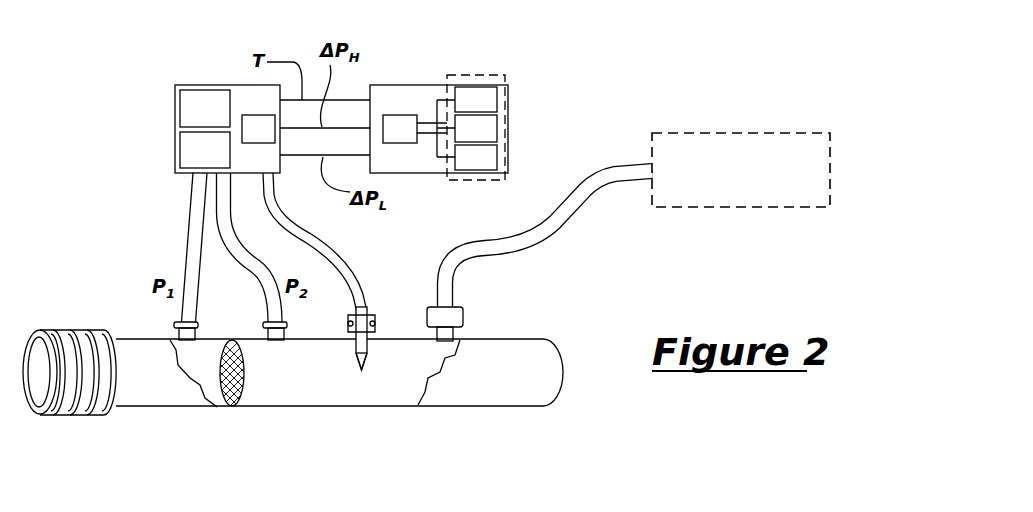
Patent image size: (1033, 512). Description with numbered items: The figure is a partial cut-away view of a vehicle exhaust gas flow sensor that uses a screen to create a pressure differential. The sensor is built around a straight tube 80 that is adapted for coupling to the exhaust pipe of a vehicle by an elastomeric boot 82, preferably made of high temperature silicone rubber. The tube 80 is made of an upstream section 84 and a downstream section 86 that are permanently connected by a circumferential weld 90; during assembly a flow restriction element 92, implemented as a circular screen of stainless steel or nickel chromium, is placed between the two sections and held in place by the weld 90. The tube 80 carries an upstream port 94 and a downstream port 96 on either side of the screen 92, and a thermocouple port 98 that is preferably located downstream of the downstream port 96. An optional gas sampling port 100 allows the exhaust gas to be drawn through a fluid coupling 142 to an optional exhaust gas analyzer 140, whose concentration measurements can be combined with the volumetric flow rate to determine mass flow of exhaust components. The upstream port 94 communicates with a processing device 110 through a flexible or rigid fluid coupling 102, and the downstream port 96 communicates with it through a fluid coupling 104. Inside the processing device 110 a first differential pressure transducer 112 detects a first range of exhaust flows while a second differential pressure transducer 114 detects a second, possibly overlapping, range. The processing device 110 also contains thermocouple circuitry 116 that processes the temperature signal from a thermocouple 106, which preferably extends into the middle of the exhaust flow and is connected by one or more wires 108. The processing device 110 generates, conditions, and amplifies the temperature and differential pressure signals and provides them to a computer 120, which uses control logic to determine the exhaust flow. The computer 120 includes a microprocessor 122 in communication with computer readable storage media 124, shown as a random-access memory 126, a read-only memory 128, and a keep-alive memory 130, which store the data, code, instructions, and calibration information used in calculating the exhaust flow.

The straight tube 80 is at (302, 407).
The elastomeric boot 82 is at (68, 416).
The upstream section 84 is at (157, 408).
The downstream section 86 is at (402, 407).
The circumferential weld 90 is at (236, 338).
The flow restriction element 92 is at (245, 368).
The upstream port 94 is at (173, 337).
The downstream port 96 is at (285, 333).
The thermocouple port 98 is at (377, 312).
The gas sampling port 100 is at (427, 318).
The fluid coupling 102 is at (193, 204).
The fluid coupling 104 is at (218, 242).
The thermocouple 106 is at (375, 350).
The wires 108 is at (297, 223).
The processing device 110 is at (228, 103).
The first differential pressure transducer 112 is at (180, 107).
The second differential pressure transducer 114 is at (180, 147).
The thermocouple circuitry 116 is at (248, 115).
The computer 120 is at (478, 124).
The microprocessor 122 is at (400, 143).
The computer readable storage media 124 is at (516, 110).
The random-access memory 126 is at (497, 98).
The read-only memory 128 is at (497, 127).
The keep-alive memory 130 is at (497, 155).
The exhaust gas analyzer 140 is at (738, 132).
The fluid coupling 142 is at (567, 228).